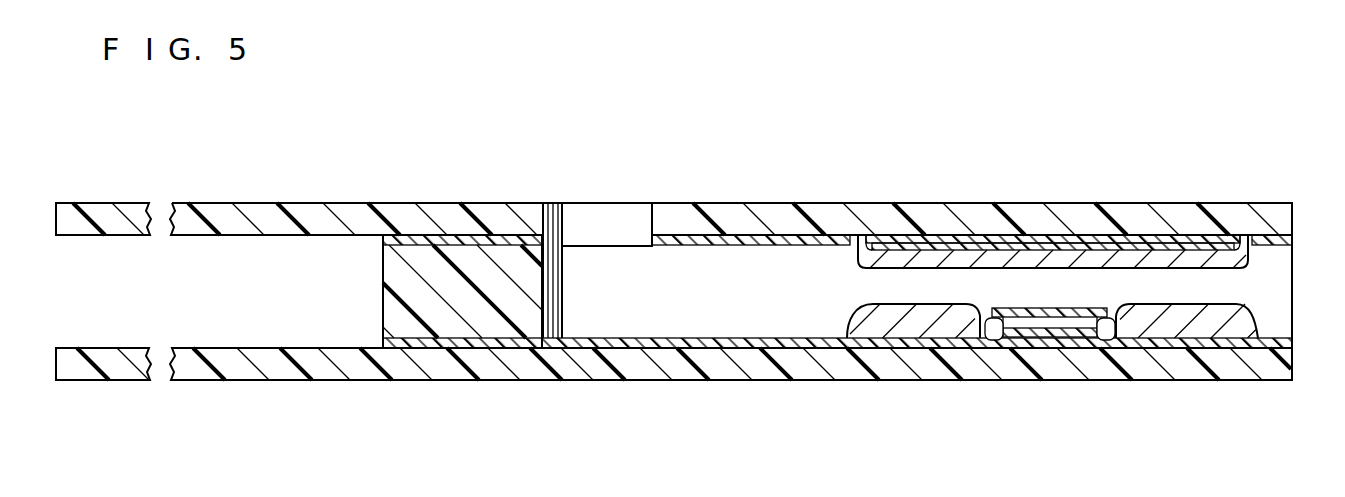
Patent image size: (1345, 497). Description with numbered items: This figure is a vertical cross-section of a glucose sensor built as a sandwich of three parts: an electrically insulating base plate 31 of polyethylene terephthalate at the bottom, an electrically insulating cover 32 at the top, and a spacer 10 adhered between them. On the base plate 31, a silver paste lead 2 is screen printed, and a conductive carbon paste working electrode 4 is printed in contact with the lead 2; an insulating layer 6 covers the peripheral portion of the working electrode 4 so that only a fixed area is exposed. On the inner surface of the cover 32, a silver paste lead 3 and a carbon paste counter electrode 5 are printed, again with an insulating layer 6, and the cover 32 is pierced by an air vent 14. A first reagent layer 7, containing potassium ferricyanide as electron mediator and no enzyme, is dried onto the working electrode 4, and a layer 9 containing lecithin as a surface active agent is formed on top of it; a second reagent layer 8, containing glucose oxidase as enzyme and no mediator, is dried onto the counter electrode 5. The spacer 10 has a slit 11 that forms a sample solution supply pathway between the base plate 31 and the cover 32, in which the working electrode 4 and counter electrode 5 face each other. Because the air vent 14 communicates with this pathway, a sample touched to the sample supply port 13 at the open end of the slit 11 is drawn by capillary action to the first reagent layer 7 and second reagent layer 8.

The lead 2 is at (1047, 343).
The lead 3 is at (1043, 233).
The working electrode 4 is at (1005, 338).
The counter electrode 5 is at (1233, 243).
The insulating layer 6 is at (692, 233).
The first reagent layer 7 is at (1085, 310).
The second reagent layer 8 is at (1227, 257).
The layer containing surface active agent 9 is at (870, 323).
The spacer 10 is at (405, 275).
The slit 11 is at (638, 318).
The sample supply port 13 is at (1268, 297).
The air vent 14 is at (588, 228).
The base plate 31 is at (282, 367).
The cover 32 is at (310, 222).